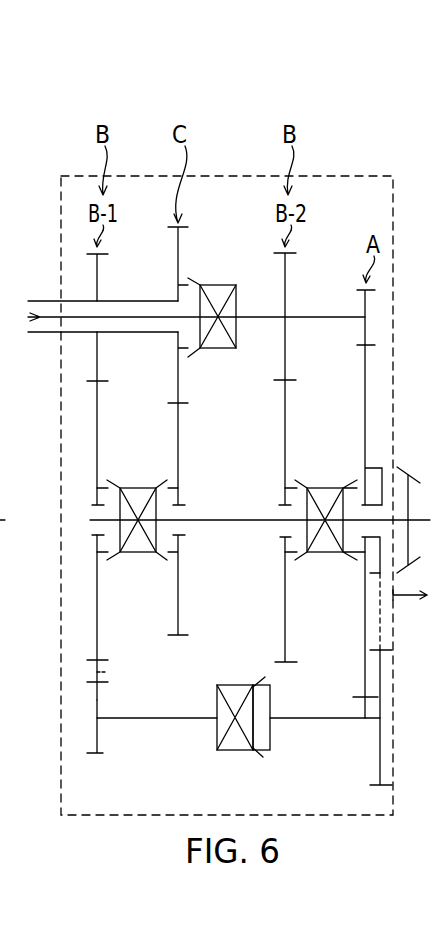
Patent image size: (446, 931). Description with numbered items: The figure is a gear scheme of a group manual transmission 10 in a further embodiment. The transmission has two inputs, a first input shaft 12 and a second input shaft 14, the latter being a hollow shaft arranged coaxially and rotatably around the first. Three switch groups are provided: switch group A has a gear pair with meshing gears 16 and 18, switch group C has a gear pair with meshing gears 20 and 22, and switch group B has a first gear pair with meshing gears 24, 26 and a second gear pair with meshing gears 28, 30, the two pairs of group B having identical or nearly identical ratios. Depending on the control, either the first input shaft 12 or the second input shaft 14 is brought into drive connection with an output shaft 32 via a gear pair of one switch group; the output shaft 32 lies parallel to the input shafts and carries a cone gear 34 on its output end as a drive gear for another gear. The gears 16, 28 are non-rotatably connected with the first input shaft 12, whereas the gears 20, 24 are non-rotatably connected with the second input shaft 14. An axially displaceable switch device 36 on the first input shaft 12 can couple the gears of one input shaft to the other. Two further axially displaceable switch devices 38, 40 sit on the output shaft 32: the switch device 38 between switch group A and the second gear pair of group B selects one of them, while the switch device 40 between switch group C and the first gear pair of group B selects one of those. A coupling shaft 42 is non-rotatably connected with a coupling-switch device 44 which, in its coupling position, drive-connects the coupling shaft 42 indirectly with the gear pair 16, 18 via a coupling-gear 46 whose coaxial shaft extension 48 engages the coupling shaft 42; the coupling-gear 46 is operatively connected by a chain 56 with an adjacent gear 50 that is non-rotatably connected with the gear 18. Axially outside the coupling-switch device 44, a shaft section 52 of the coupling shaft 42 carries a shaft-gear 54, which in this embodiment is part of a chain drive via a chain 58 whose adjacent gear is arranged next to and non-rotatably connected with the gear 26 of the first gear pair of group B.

The group manual transmission 10 is at (249, 98).
The first input shaft 12 is at (48, 320).
The second input shaft 14 is at (48, 300).
The gear 16 is at (365, 305).
The gear 18 is at (365, 365).
The gear 20 is at (178, 250).
The gear 22 is at (178, 436).
The gear 24 is at (97, 275).
The gear 26 is at (97, 410).
The gear 28 is at (285, 280).
The gear 30 is at (285, 405).
The output shaft 32 is at (233, 520).
The cone gear 34 is at (397, 467).
The switch device 36 is at (226, 348).
The switch device 38 is at (320, 488).
The switch device 40 is at (129, 552).
The coupling shaft 42 is at (190, 734).
The coupling-switch device 44 is at (240, 750).
The coupling-gear 46 is at (380, 735).
The shaft extension 48 is at (303, 718).
The adjacent gear 50 is at (380, 562).
The shaft section 52 is at (97, 718).
The shaft-gear 54 is at (97, 703).
The chain 56 is at (380, 618).
The chain 58 is at (105, 672).